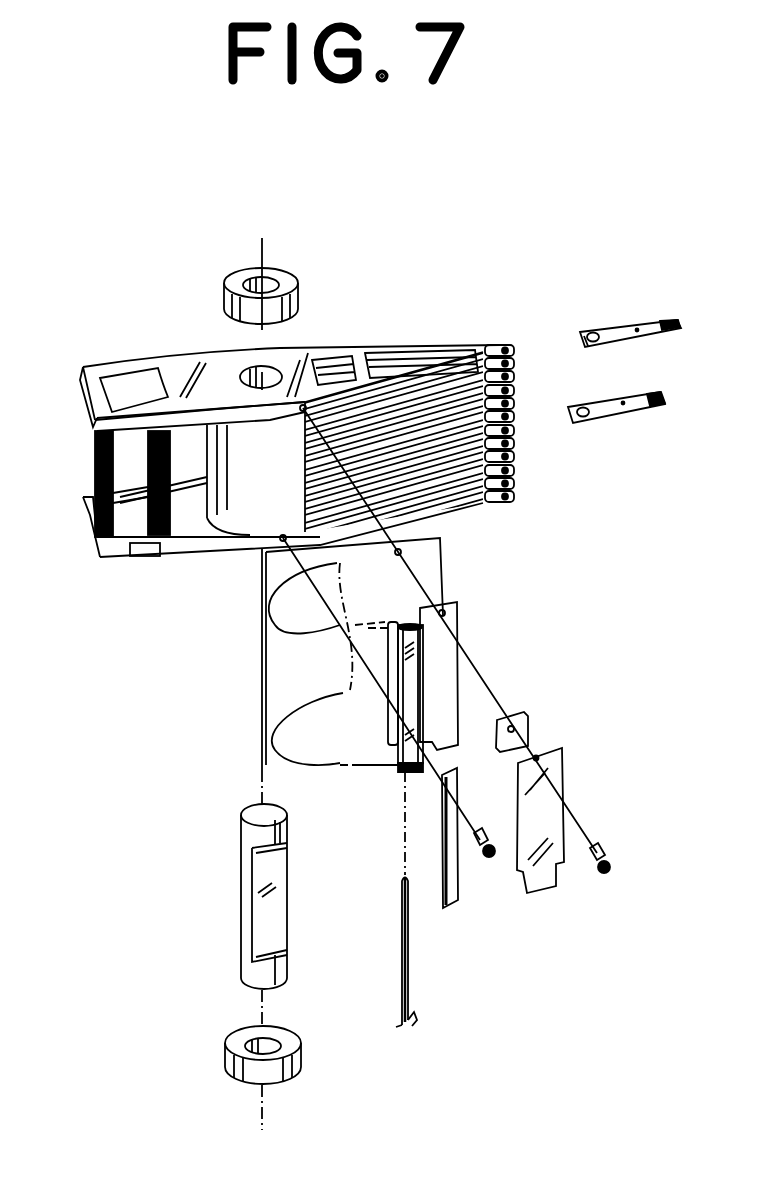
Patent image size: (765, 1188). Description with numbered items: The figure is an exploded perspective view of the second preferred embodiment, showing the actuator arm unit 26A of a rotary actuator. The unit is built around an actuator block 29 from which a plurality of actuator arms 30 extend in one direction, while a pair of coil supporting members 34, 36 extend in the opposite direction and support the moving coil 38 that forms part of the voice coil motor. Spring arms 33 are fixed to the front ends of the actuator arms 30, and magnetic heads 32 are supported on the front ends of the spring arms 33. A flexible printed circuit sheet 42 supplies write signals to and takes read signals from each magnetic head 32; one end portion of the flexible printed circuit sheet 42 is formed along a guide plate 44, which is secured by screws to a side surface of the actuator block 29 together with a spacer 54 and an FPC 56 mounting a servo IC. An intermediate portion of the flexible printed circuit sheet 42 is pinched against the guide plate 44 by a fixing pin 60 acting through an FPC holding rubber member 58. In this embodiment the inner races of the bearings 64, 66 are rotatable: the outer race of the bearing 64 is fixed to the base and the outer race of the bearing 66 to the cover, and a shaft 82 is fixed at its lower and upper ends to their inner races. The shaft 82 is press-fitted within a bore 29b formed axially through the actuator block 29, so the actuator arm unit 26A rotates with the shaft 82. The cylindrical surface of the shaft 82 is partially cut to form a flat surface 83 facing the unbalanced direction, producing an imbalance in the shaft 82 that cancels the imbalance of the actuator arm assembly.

The actuator arm unit 26A is at (292, 340).
The actuator block 29 is at (247, 510).
The bore 29b is at (250, 373).
The actuator arms 30 is at (393, 348).
The magnetic heads 32 is at (667, 322).
The spring arms 33 is at (623, 330).
The coil supporting member 34 is at (178, 363).
The coil supporting member 36 is at (176, 553).
The moving coil 38 is at (93, 468).
The flexible printed circuit sheet 42 is at (430, 572).
The guide plate 44 is at (452, 657).
The spacer 54 is at (530, 724).
The FPC mounting a servo IC 56 is at (553, 800).
The FPC holding rubber member 58 is at (462, 873).
The fixing pin 60 is at (412, 973).
The bearing 64 is at (248, 1085).
The bearing 66 is at (270, 270).
The shaft 82 is at (242, 838).
The flat surface 83 is at (277, 897).